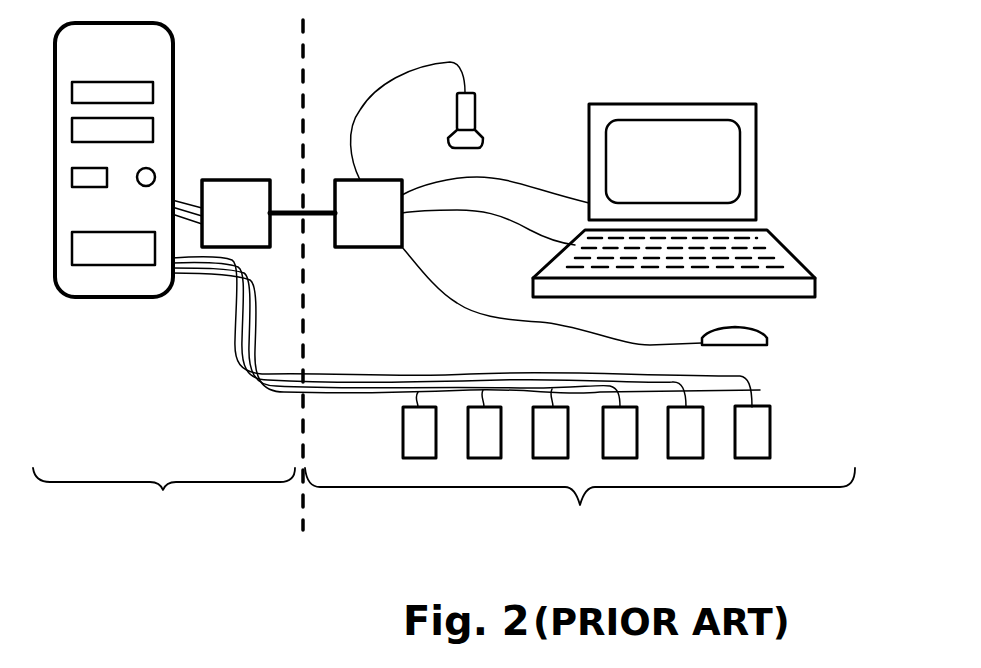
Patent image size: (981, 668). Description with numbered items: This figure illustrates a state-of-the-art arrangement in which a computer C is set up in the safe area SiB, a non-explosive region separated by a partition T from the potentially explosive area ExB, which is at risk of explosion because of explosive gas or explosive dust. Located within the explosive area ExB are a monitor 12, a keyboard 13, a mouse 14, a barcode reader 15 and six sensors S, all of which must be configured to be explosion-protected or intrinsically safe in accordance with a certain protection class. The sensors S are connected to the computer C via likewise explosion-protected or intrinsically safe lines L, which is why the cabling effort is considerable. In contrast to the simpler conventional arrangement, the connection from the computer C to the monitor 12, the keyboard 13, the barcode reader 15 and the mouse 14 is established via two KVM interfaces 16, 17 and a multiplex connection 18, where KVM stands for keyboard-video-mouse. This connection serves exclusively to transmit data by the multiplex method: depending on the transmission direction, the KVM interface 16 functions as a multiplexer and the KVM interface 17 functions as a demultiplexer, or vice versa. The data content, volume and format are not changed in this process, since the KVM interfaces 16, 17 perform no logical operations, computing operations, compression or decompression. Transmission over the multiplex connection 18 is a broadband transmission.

The monitor 12 is at (722, 104).
The keyboard 13 is at (787, 240).
The mouse 14 is at (747, 325).
The barcode reader 15 is at (480, 113).
The KVM interface 16 is at (240, 180).
The KVM interface 17 is at (393, 180).
The multiplex connection 18 is at (315, 214).
The computer C is at (82, 297).
The lines L is at (210, 275).
The sensors S is at (468, 438).
The partition T is at (307, 497).
The safe area SiB is at (164, 508).
The explosive area ExB is at (580, 508).